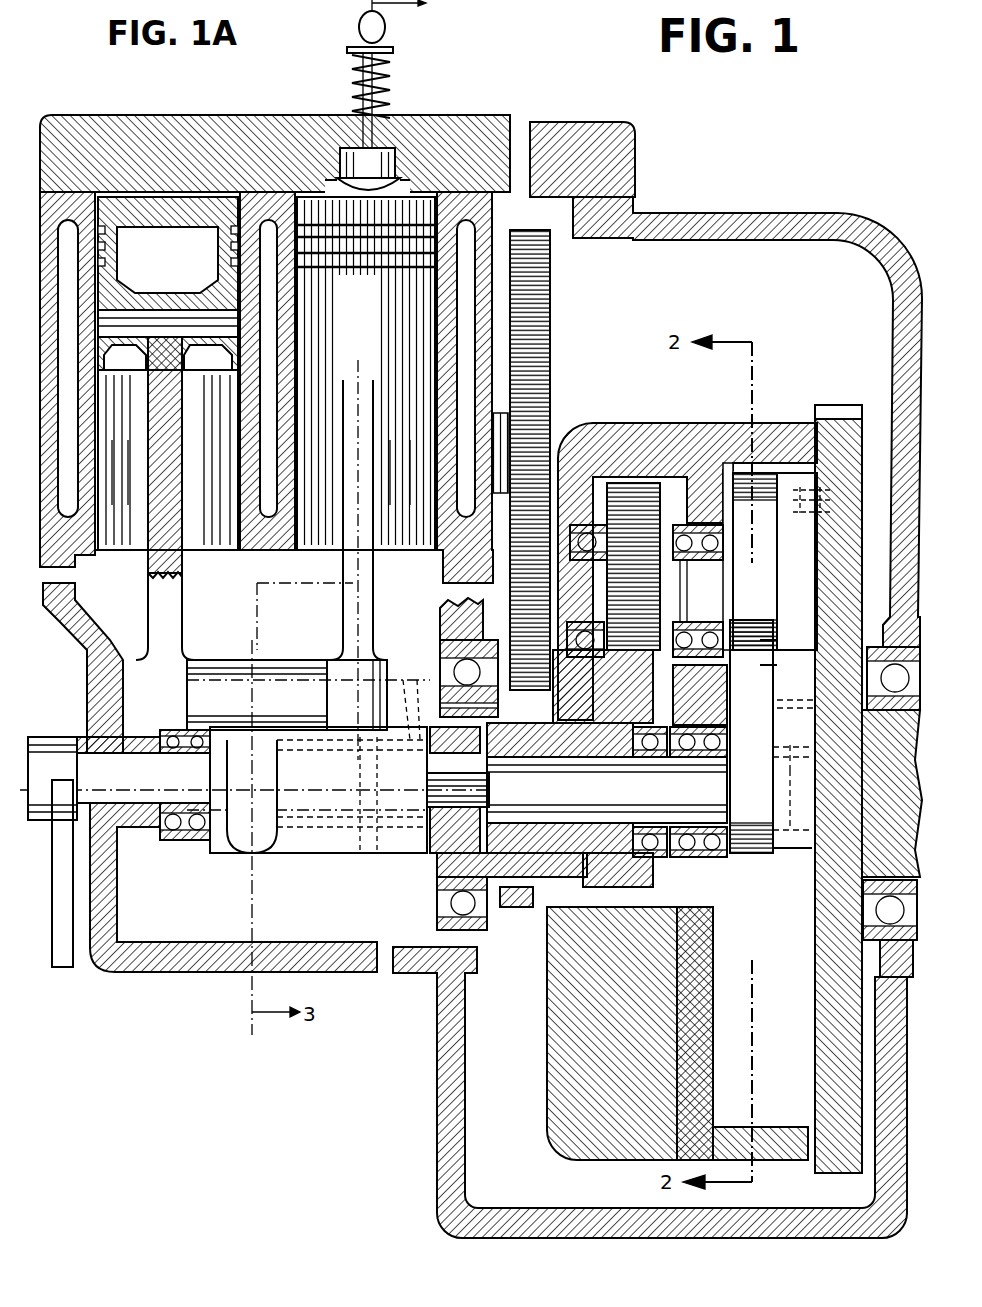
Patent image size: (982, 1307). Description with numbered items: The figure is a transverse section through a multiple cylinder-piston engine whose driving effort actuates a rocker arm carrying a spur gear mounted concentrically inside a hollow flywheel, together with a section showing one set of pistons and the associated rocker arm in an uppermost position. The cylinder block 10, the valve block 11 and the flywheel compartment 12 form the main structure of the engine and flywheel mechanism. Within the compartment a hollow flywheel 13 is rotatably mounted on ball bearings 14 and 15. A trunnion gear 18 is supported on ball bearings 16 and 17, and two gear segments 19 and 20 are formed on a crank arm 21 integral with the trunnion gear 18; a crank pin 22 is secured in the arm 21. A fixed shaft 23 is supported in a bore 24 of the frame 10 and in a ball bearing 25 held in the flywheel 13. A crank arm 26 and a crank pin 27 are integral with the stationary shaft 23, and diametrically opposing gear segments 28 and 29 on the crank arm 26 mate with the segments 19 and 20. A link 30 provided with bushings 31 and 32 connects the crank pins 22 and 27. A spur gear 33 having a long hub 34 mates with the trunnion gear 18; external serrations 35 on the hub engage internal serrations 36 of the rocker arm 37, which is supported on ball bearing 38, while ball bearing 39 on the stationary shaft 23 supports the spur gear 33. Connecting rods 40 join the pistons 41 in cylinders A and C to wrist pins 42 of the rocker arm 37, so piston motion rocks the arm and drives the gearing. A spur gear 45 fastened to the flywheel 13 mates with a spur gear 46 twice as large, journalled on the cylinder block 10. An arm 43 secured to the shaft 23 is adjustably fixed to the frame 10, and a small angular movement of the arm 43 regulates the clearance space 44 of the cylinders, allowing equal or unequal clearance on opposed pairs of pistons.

In FIG. 1A, the cylinder block 10 is at (160, 973).
In FIG. 1, the valve block 11 is at (533, 122).
In FIG. 1, the flywheel compartment 12 is at (764, 307).
In FIG. 1, the hollow flywheel 13 is at (667, 423).
In FIG. 1A, the ball bearing 14 is at (440, 650).
In FIG. 1, the ball bearing 15 is at (880, 650).
In FIG. 1, the ball bearing 16 is at (573, 553).
In FIG. 1, the ball bearing 17 is at (695, 560).
In FIG. 1, the trunnion gear 18 is at (647, 546).
In FIG. 1, the gear segment 19 is at (750, 483).
In FIG. 1, the gear segment 20 is at (765, 645).
In FIG. 1, the crank arm 21 is at (767, 594).
In FIG. 1, the crank pin 22 is at (815, 422).
In FIG. 1A, the fixed shaft 23 is at (466, 790).
In FIG. 1A, the bore 24 is at (83, 757).
In FIG. 1, the ball bearing 25 is at (703, 760).
In FIG. 1, the crank arm 26 is at (767, 791).
In FIG. 1, the crank pin 27 is at (790, 775).
In FIG. 1, the gear segment 28 is at (767, 667).
In FIG. 1, the gear segment 29 is at (780, 850).
In FIG. 1, the link 30 is at (806, 601).
In FIG. 1, the bushing 31 is at (833, 503).
In FIG. 1, the bushing 32 is at (788, 770).
In FIG. 1, the spur gear 33 is at (638, 897).
In FIG. 1, the long hub 34 is at (527, 747).
In FIG. 1A, the external serrations 35 is at (388, 837).
In FIG. 1A, the internal serrations 36 is at (410, 735).
In FIG. 1A, the rocker arm 37 is at (232, 655).
In FIG. 1A, the ball bearing 38 is at (187, 840).
In FIG. 1, the ball bearing 39 is at (637, 760).
In FIG. 1A, the connecting rod 40 is at (170, 593).
In FIG. 1A, the piston 41 is at (176, 276).
In FIG. 1A, the wrist pin 42 is at (312, 652).
In FIG. 1A, the arm 43 is at (63, 957).
In FIG. 1A, the clearance space 44 is at (175, 197).
In FIG. 1, the spur gear 45 is at (515, 907).
In FIG. 1, the spur gear 46 is at (550, 352).
In FIG. 1A, the cylinder A is at (412, 484).
In FIG. 1A, the cylinder C is at (130, 484).